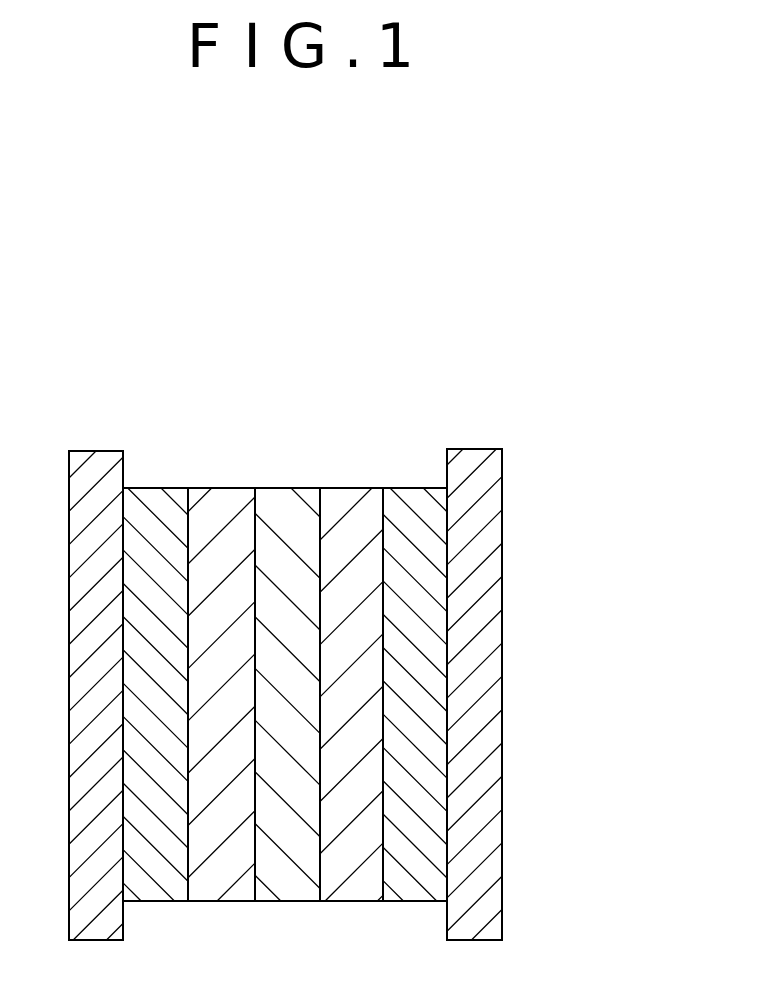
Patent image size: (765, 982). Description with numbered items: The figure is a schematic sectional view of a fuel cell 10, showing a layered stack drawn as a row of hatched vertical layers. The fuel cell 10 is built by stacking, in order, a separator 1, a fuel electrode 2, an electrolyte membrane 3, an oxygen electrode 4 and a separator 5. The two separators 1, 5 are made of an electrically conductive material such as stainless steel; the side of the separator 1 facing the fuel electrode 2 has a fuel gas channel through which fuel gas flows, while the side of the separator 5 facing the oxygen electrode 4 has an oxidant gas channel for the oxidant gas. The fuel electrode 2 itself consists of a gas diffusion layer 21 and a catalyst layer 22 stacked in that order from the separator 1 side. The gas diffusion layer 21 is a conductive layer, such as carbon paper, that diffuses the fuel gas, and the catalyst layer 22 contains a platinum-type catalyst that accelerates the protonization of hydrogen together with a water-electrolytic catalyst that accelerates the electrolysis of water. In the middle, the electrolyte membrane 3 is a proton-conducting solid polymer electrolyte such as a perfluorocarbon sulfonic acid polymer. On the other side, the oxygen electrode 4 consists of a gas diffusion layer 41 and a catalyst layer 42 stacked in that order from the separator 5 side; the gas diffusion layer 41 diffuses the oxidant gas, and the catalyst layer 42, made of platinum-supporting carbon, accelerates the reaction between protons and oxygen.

The fuel cell 10 is at (531, 370).
The separator 1 is at (470, 462).
The fuel electrode 2 is at (445, 418).
The gas diffusion layer 21 is at (420, 500).
The catalyst layer 22 is at (347, 505).
The electrolyte membrane 3 is at (291, 505).
The oxygen electrode 4 is at (258, 418).
The gas diffusion layer 41 is at (157, 502).
The catalyst layer 42 is at (228, 502).
The separator 5 is at (93, 480).